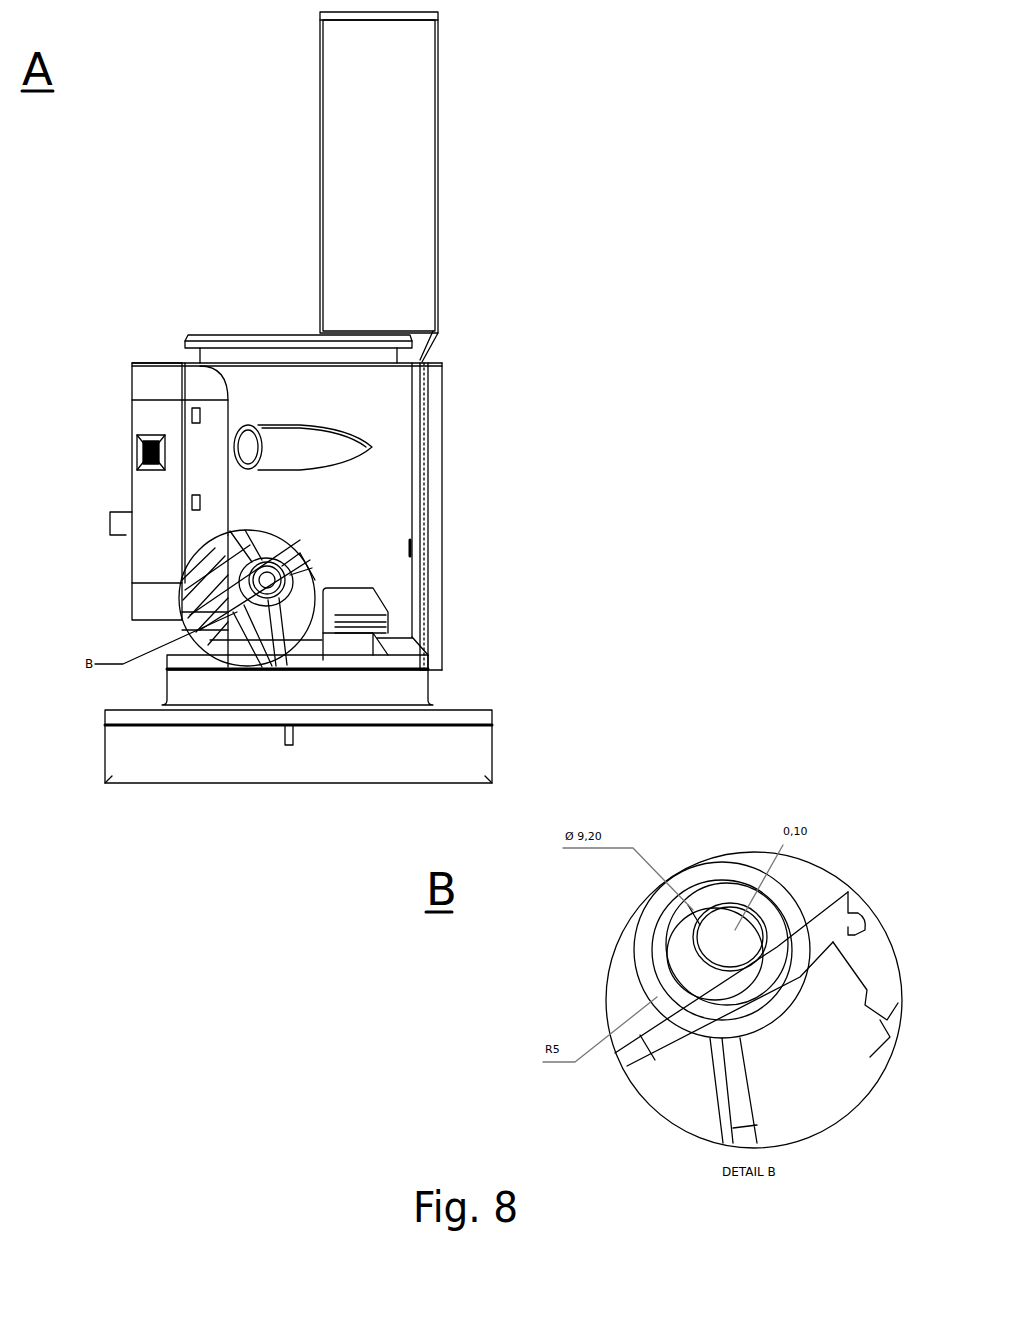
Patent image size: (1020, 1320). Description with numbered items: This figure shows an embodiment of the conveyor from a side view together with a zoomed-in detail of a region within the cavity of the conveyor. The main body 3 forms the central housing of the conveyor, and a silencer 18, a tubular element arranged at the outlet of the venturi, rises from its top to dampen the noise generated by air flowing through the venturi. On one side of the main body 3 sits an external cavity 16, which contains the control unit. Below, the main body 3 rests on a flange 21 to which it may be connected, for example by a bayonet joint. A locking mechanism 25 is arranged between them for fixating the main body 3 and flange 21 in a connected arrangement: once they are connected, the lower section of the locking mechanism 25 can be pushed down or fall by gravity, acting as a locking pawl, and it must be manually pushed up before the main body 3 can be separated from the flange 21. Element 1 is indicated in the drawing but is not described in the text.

The nozzle 1 is at (289, 436).
The main body 3 is at (393, 472).
The external cavity 16 is at (138, 430).
The silencer 18 is at (385, 211).
The flange 21 is at (455, 710).
The locking mechanism 25 is at (396, 620).